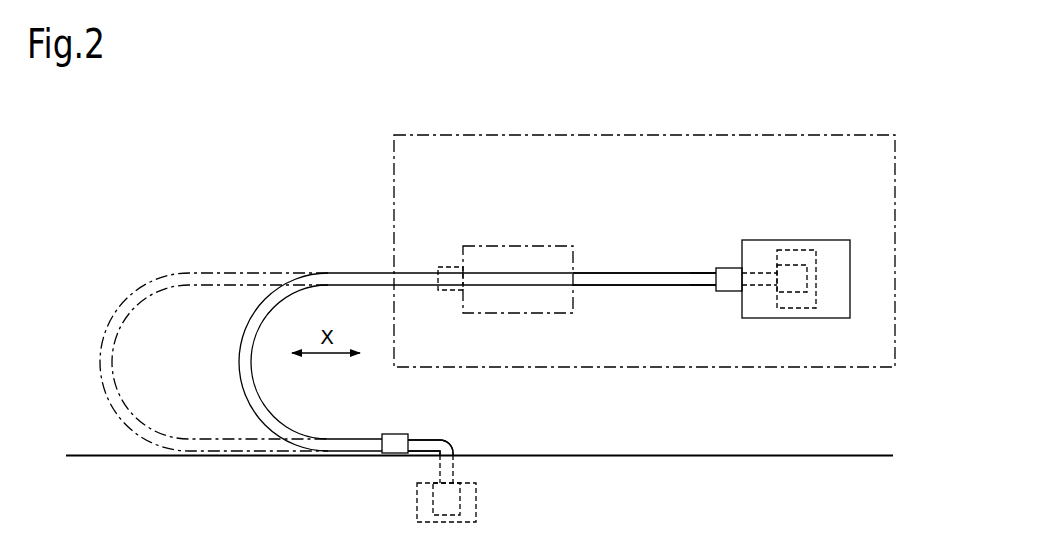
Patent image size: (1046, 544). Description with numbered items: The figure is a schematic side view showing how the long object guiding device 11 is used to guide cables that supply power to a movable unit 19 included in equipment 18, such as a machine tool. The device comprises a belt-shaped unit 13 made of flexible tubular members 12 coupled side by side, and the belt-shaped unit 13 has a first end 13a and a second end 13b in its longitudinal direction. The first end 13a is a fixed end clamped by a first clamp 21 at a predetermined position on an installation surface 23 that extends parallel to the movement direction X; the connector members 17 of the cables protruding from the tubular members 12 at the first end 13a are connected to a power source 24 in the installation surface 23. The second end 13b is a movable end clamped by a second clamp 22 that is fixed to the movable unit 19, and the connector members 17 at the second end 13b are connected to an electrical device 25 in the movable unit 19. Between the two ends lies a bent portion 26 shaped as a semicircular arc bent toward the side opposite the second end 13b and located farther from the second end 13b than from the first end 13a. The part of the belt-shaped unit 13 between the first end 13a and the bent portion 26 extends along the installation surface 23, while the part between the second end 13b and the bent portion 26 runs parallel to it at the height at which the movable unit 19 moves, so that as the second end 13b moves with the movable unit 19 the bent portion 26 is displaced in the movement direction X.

The long object guiding device 11 is at (296, 226).
The tubular member 12 is at (642, 272).
The belt-shaped unit 13 is at (381, 270).
The first end 13a is at (439, 426).
The second end 13b is at (717, 298).
The connector member 17 is at (790, 308).
The equipment 18 is at (394, 152).
The movable unit 19 is at (552, 246).
The first clamp 21 is at (396, 434).
The second clamp 22 is at (448, 267).
The installation surface 23 is at (590, 455).
The power source 24 is at (476, 503).
The electrical device 25 is at (817, 302).
The bent portion 26 is at (104, 335).